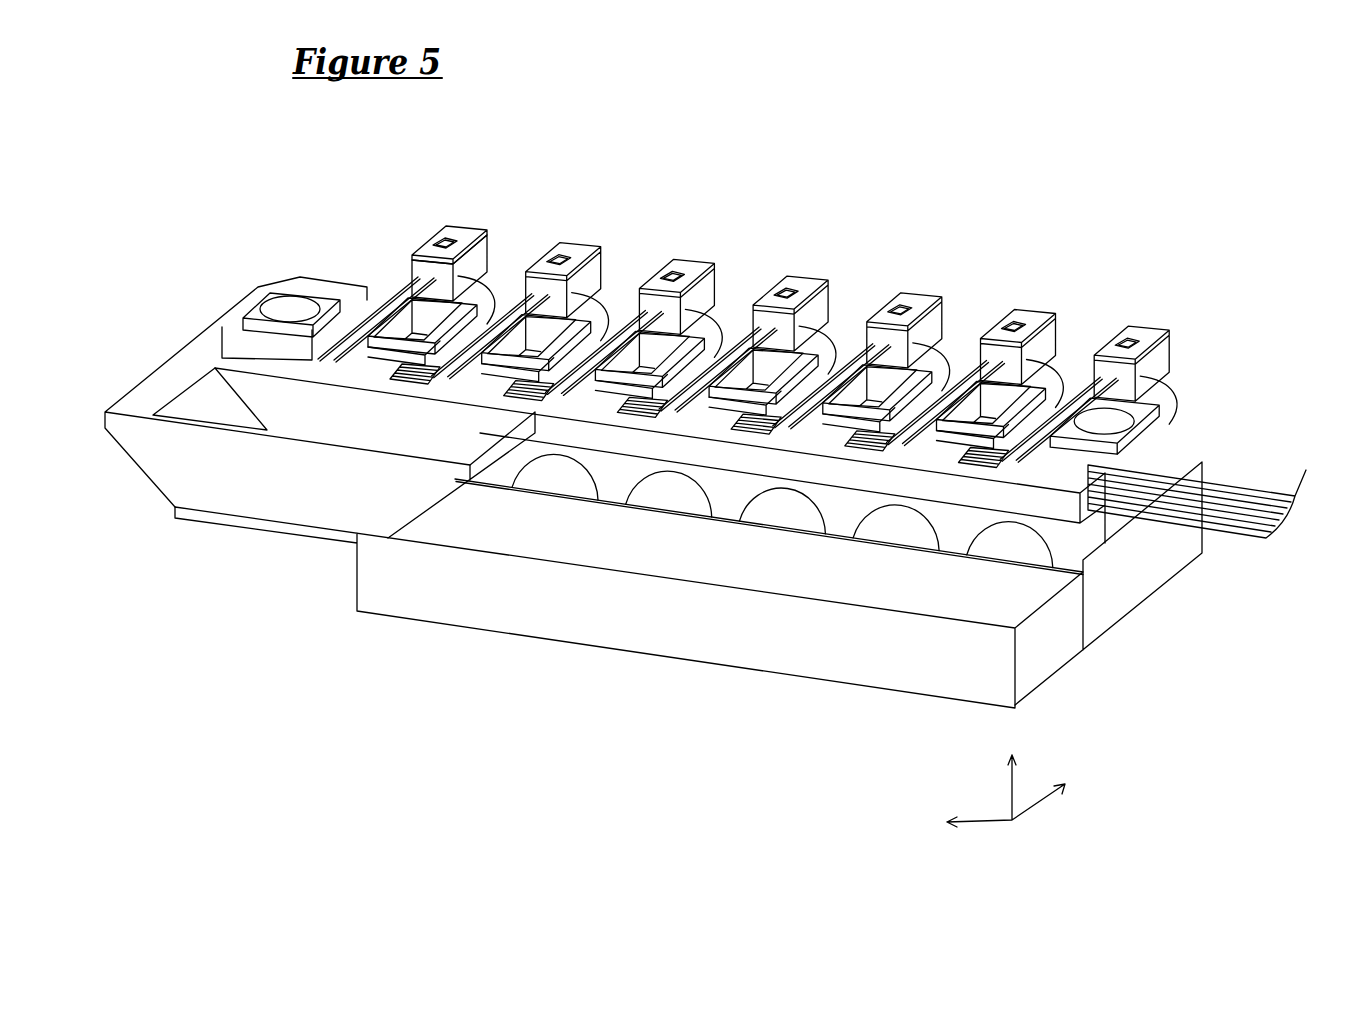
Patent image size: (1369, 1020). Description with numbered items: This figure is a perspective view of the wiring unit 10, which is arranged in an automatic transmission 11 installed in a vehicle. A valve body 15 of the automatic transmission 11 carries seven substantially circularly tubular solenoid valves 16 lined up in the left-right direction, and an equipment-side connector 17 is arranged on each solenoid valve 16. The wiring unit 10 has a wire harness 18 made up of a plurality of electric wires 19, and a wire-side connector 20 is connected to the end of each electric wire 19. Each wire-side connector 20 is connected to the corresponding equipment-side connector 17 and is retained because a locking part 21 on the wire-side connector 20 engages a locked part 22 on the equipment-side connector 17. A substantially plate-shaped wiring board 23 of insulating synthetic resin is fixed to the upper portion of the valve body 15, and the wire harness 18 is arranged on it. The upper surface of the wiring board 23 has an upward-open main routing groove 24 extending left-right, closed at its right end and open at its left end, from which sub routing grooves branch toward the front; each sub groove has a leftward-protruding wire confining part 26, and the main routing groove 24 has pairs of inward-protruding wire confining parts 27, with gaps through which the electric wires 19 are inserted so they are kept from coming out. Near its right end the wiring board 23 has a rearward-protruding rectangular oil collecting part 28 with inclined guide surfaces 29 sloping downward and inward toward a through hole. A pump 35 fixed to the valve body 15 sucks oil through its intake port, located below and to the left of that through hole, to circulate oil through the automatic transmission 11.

The wiring unit 10 is at (1187, 347).
The automatic transmission 11 is at (996, 133).
The valve body 15 is at (1124, 589).
The solenoid valve 16 is at (490, 303).
The equipment-side connector 17 is at (472, 235).
The wire harness 18 is at (1252, 543).
The electric wire 19 is at (313, 357).
The wire-side connector 20 is at (426, 252).
The locking part 21 is at (448, 242).
The locked part 22 is at (441, 244).
The wiring board 23 is at (1157, 416).
The main routing groove 24 is at (262, 328).
The wire confining part 26 is at (358, 318).
The wire confining part 27 is at (730, 396).
The oil collecting part 28 is at (462, 441).
The inclined guide surface 29 is at (208, 400).
The pump 35 is at (866, 667).